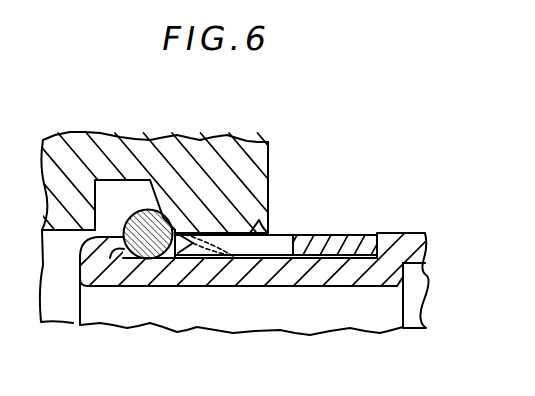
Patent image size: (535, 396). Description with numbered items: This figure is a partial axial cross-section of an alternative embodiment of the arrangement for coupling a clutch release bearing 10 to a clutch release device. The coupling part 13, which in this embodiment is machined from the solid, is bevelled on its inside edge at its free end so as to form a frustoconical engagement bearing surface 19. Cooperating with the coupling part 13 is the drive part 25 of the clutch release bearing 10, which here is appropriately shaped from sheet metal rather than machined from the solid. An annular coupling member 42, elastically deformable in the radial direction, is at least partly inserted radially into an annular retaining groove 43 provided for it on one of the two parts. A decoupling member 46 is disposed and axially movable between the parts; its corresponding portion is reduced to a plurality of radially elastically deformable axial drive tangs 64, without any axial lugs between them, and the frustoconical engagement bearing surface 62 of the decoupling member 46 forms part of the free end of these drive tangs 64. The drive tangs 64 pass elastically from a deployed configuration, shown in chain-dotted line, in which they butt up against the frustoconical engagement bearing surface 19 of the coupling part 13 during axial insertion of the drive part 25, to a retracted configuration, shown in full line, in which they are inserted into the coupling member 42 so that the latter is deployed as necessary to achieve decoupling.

The clutch release bearing 10 is at (438, 229).
The coupling part 13 is at (275, 133).
The frustoconical engagement bearing surface 19 is at (269, 231).
The drive part 25 is at (294, 277).
The annular coupling member 42 is at (139, 198).
The annular retaining groove 43 is at (110, 184).
The decoupling member 46 is at (339, 226).
The frustoconical engagement bearing surface 62 is at (188, 246).
The drive tangs 64 is at (242, 246).